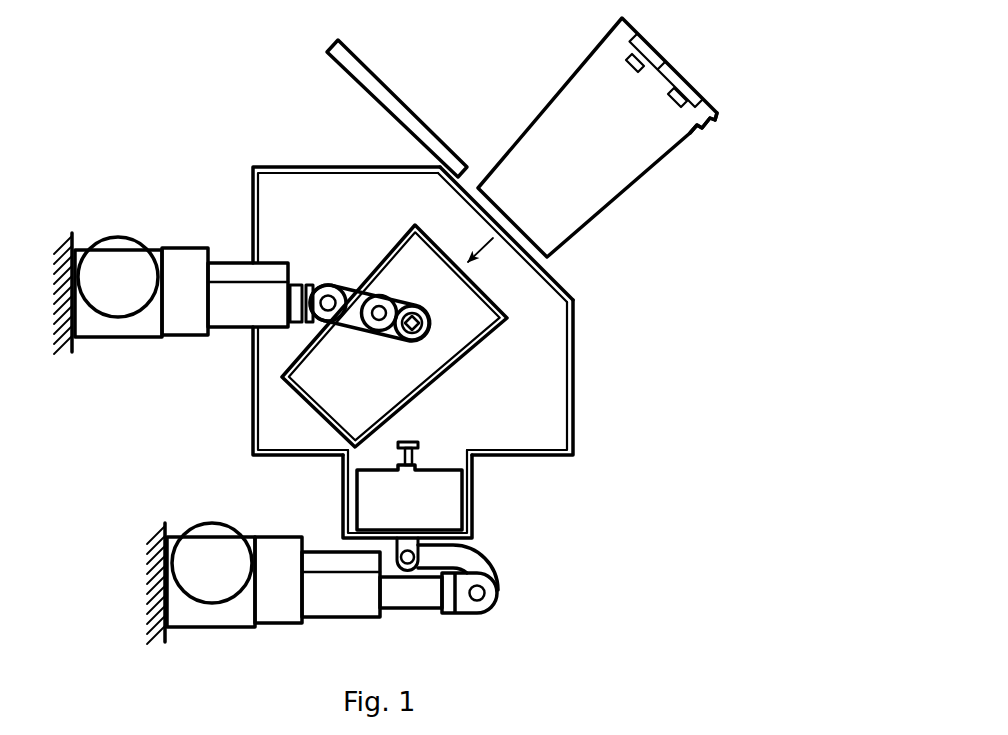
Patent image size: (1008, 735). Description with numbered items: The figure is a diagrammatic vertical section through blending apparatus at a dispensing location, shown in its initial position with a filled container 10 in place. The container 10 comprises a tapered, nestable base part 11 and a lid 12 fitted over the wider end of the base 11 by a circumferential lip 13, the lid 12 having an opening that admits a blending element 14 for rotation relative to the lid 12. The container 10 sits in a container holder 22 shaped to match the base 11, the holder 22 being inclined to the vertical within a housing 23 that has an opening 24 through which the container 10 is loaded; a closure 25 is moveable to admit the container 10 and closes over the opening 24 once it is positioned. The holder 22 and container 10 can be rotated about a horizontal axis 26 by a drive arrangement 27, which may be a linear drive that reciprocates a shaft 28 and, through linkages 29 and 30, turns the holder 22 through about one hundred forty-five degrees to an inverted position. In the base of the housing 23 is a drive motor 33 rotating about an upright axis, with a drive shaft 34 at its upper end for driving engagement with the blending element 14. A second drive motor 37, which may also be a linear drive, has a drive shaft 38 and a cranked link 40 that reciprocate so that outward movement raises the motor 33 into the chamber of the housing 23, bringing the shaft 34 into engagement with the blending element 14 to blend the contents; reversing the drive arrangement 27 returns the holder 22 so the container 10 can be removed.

The container 10 is at (616, 128).
The base part 11 is at (536, 118).
The lid 12 is at (645, 32).
The circumferential lip 13 is at (713, 122).
The blending element 14 is at (661, 101).
The container holder 22 is at (481, 342).
The housing 23 is at (573, 427).
The opening 24 is at (562, 280).
The closure 25 is at (383, 107).
The horizontal axis 26 is at (411, 307).
The drive arrangement 27 is at (170, 352).
The shaft 28 is at (309, 282).
The linkage 29 is at (353, 333).
The linkage 30 is at (408, 340).
The drive motor 33 is at (433, 505).
The drive shaft 34 is at (413, 442).
The drive motor 37 is at (207, 513).
The drive shaft 38 is at (407, 613).
The cranked link 40 is at (474, 565).